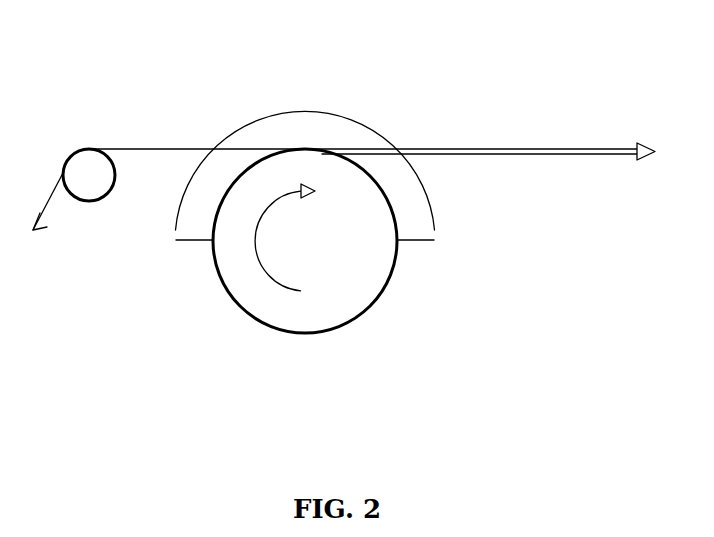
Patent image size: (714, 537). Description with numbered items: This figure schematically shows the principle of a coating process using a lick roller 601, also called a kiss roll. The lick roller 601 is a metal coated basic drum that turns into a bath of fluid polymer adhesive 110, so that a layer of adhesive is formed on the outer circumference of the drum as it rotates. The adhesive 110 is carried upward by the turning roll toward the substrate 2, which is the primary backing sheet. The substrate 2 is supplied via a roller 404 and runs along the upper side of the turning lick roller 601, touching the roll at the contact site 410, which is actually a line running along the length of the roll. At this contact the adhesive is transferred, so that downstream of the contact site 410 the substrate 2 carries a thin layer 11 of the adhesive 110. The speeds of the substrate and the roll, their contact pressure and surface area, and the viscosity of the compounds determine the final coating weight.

The substrate 2 is at (183, 148).
The thin layer of adhesive 11 is at (580, 157).
The roller 404 is at (88, 202).
The lick roller 601 is at (383, 187).
The contact site 410 is at (320, 137).
The fluid polymer adhesive 110 is at (288, 355).